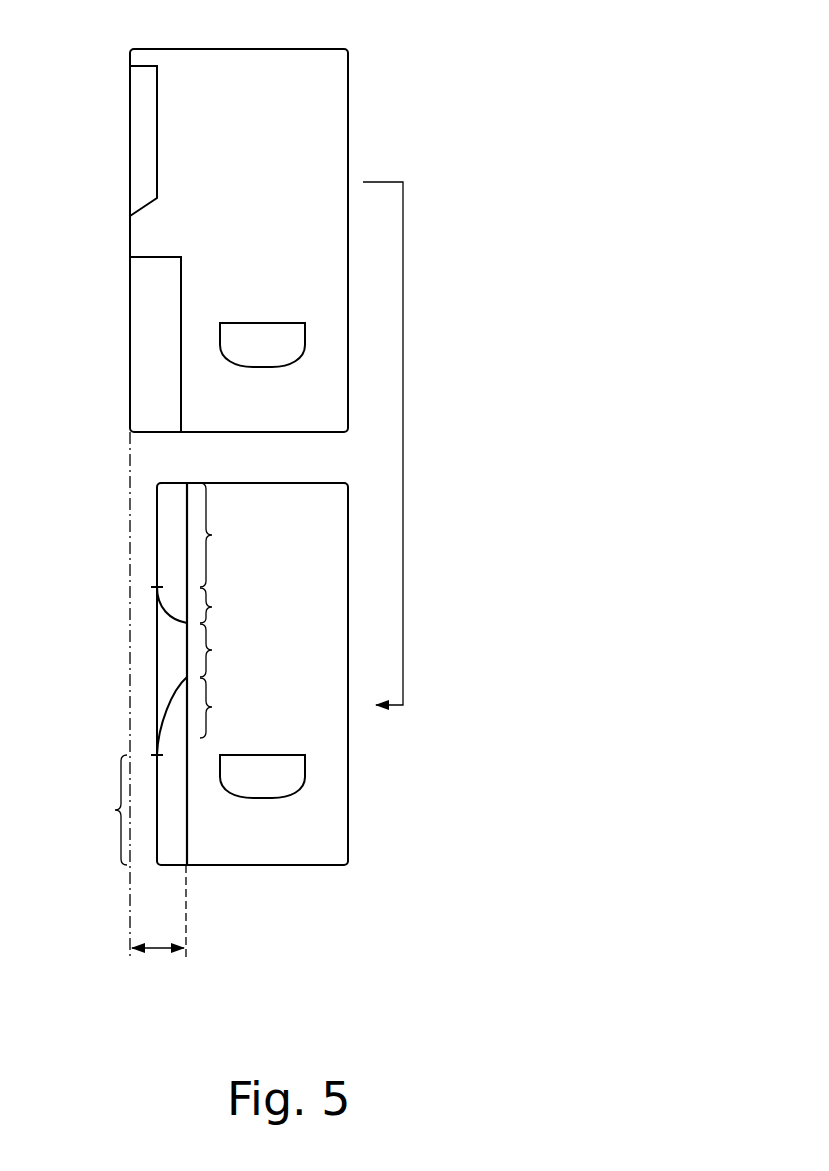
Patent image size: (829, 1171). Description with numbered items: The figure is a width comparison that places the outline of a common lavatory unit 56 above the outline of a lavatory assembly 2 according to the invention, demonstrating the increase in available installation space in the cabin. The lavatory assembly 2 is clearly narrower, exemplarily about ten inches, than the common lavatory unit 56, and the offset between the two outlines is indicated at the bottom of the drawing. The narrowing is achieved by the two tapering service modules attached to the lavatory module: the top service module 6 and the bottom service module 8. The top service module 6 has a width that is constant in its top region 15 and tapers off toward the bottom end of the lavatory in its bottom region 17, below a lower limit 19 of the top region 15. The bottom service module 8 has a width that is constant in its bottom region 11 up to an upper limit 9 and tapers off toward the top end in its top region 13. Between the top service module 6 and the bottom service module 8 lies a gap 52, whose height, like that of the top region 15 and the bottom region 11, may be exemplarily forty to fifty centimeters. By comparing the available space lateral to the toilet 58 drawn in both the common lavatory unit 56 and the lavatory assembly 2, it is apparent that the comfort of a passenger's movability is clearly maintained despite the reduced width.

The lavatory assembly 2 is at (376, 805).
The top service module 6 is at (172, 522).
The bottom service module 8 is at (172, 725).
The upper limit 9 is at (174, 766).
The bottom region 11 is at (102, 810).
The top region 13 is at (224, 708).
The top region 15 is at (227, 535).
The bottom region 17 is at (226, 605).
The lower limit 19 is at (146, 592).
The gap 52 is at (226, 650).
The common lavatory unit 56 is at (356, 85).
The toilet 58 is at (263, 342).